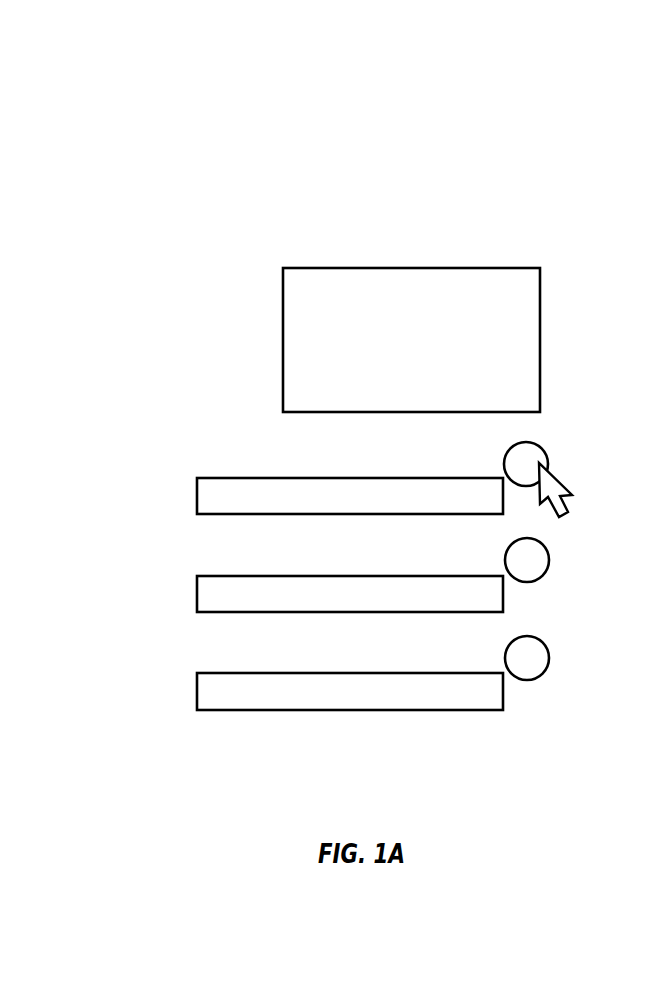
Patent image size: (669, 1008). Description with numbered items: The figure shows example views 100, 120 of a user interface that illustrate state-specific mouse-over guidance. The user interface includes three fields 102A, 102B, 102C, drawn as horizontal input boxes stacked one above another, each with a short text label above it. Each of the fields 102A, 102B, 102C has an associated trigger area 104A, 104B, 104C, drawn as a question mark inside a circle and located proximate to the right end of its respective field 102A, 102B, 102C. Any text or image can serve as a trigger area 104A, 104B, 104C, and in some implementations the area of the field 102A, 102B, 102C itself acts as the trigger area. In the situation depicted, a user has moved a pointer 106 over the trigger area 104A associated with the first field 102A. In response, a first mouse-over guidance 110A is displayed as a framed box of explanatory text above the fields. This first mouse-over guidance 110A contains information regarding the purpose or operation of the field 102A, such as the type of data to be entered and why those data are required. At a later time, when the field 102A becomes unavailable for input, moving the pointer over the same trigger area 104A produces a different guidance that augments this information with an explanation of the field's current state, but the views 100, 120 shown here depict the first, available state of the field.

The user interface view 100 is at (181, 111).
The user interface view 120 is at (654, 111).
The first mouse-over guidance 110A is at (283, 340).
The field 102A is at (197, 494).
The field 102B is at (197, 594).
The field 102C is at (197, 691).
The trigger area 104A is at (543, 448).
The trigger area 104B is at (549, 560).
The trigger area 104C is at (549, 658).
The pointer 106 is at (576, 495).